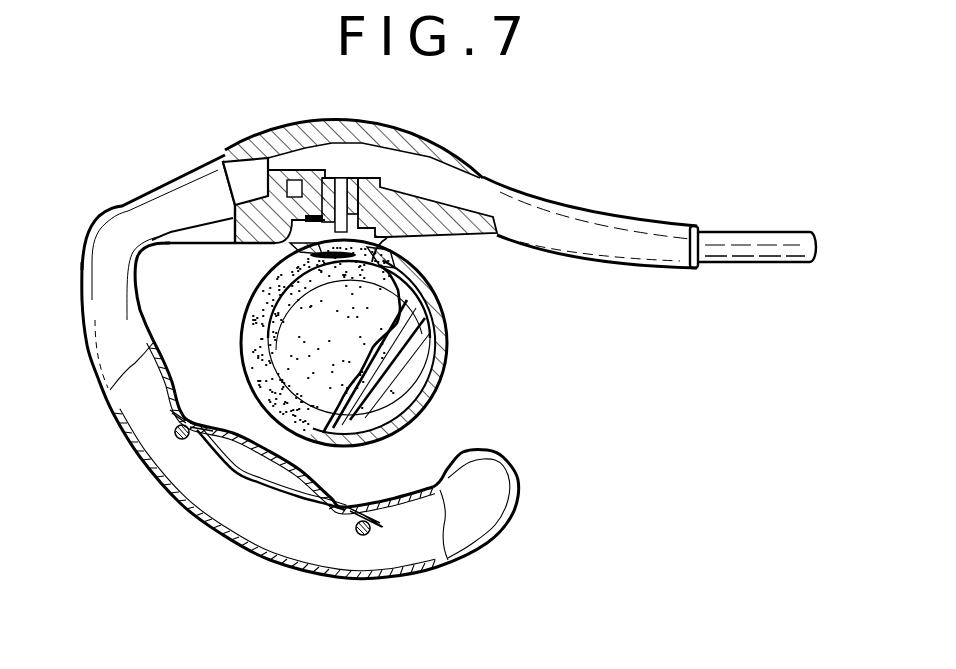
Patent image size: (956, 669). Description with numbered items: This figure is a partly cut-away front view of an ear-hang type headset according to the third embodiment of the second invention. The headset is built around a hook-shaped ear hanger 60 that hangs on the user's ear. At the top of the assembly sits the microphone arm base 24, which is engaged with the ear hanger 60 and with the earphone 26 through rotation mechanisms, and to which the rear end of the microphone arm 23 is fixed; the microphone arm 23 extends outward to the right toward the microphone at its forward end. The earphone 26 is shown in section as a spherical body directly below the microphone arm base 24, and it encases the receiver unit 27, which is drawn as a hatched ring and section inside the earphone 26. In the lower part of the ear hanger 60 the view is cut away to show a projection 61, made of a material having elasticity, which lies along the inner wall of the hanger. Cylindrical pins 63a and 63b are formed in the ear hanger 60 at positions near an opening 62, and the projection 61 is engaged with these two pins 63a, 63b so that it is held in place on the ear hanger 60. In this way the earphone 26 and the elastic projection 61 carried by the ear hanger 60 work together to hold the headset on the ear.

The ear hanger 60 is at (172, 195).
The microphone arm base 24 is at (580, 218).
The microphone arm 23 is at (750, 233).
The earphone 26 is at (293, 307).
The receiver unit 27 is at (420, 353).
The projection 61 is at (318, 480).
The opening 62 is at (257, 481).
The cylindrical pin 63a is at (360, 534).
The cylindrical pin 63b is at (172, 437).